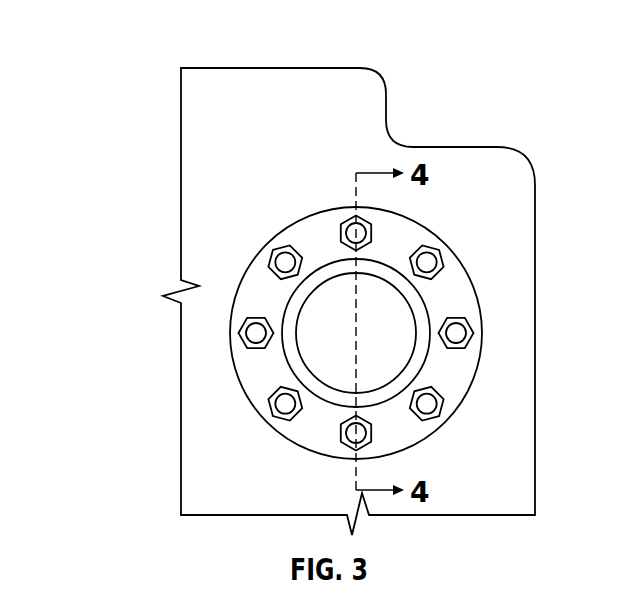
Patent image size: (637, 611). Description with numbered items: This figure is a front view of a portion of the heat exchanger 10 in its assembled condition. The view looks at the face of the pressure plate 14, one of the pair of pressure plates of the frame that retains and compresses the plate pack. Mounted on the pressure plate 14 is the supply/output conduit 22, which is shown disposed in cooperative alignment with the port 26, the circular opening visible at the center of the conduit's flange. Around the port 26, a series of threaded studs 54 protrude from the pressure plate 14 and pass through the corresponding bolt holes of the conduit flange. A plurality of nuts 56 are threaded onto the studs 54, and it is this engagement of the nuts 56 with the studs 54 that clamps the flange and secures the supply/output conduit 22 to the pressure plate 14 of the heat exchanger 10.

The heat exchanger 10 is at (140, 26).
The pressure plate 14 is at (295, 68).
The supply/output conduit 22 is at (428, 308).
The port 26 is at (327, 318).
The threaded studs 54 is at (427, 262).
The nuts 56 is at (441, 258).